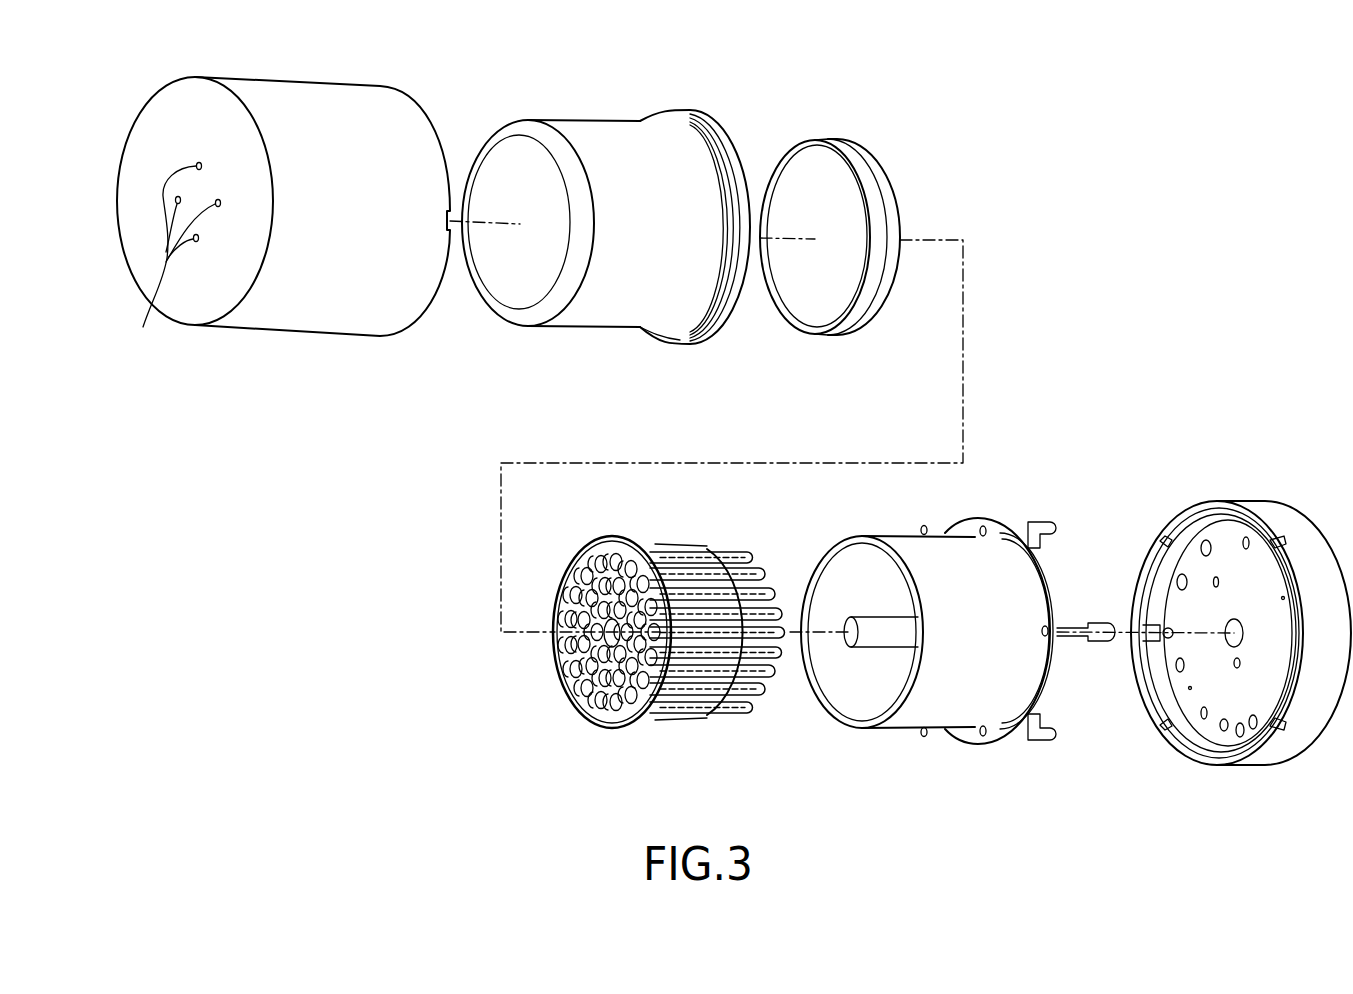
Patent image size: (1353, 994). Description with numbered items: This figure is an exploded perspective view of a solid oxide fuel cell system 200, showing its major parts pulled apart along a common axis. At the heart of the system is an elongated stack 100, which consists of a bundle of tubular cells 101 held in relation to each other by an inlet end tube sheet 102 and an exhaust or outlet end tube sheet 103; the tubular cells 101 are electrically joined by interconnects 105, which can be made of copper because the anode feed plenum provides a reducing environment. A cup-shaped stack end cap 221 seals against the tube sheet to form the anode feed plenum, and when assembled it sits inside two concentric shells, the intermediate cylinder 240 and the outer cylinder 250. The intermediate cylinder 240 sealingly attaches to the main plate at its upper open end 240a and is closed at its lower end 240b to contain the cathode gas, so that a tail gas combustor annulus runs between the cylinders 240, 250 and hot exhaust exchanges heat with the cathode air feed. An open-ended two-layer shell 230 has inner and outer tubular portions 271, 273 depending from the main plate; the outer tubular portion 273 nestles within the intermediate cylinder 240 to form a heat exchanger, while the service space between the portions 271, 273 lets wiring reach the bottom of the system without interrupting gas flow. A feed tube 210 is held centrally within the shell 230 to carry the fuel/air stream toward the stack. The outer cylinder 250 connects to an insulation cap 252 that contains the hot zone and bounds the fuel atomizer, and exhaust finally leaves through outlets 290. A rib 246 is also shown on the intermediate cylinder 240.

The elongated stack 100 is at (652, 735).
The tubular cells 101 is at (704, 703).
The inlet end tube sheet 102 is at (641, 558).
The outlet end tube sheet 103 is at (742, 553).
The interconnects 105 is at (607, 548).
The SOFC system 200 is at (284, 569).
The feed tube 210 is at (876, 628).
The stack end cap 221 is at (830, 145).
The two-layer shell 230 is at (900, 720).
The intermediate cylinder 240 is at (604, 128).
The upper open end 240a is at (698, 118).
The lower end 240b is at (505, 160).
The rib 246 is at (665, 340).
The outer cylinder 250 is at (304, 92).
The insulation cap 252 is at (1278, 512).
The inner tubular portion 271 is at (845, 698).
The outer tubular portion 273 is at (942, 708).
The outlets 290 is at (143, 327).